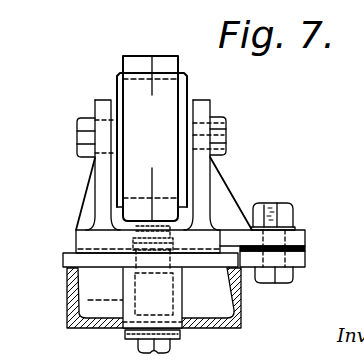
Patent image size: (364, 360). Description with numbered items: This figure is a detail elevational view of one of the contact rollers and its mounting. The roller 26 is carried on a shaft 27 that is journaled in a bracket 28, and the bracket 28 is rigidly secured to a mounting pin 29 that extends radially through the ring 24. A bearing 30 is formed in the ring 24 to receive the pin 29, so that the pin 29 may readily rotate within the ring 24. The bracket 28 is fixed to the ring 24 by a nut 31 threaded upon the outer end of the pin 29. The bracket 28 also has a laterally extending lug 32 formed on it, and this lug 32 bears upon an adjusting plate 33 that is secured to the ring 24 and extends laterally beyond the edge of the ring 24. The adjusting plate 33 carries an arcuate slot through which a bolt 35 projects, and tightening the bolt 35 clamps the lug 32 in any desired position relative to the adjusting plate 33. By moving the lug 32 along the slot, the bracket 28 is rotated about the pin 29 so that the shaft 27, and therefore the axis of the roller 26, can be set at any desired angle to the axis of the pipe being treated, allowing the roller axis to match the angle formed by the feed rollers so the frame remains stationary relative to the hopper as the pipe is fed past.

The ring 24 is at (70, 278).
The roller 26 is at (147, 46).
The shaft 27 is at (78, 127).
The bracket 28 is at (204, 103).
The mounting pin 29 is at (72, 306).
The bearing 30 is at (188, 293).
The nut 31 is at (138, 349).
The lug 32 is at (300, 238).
The adjusting plate 33 is at (299, 258).
The bolt 35 is at (292, 211).